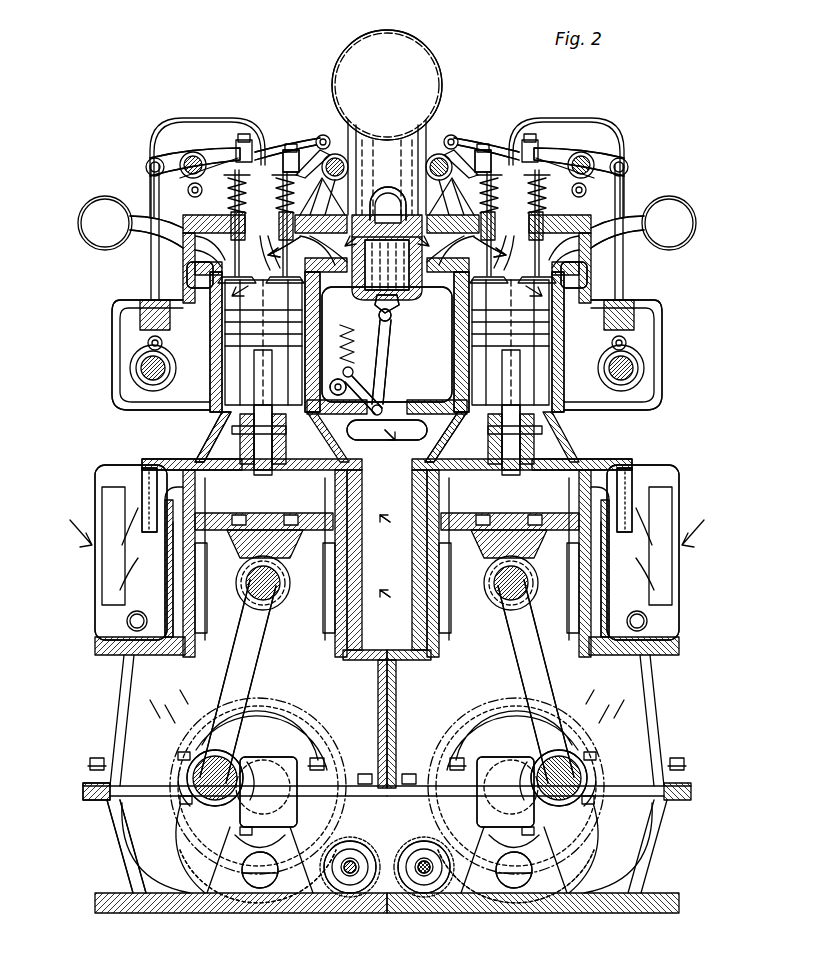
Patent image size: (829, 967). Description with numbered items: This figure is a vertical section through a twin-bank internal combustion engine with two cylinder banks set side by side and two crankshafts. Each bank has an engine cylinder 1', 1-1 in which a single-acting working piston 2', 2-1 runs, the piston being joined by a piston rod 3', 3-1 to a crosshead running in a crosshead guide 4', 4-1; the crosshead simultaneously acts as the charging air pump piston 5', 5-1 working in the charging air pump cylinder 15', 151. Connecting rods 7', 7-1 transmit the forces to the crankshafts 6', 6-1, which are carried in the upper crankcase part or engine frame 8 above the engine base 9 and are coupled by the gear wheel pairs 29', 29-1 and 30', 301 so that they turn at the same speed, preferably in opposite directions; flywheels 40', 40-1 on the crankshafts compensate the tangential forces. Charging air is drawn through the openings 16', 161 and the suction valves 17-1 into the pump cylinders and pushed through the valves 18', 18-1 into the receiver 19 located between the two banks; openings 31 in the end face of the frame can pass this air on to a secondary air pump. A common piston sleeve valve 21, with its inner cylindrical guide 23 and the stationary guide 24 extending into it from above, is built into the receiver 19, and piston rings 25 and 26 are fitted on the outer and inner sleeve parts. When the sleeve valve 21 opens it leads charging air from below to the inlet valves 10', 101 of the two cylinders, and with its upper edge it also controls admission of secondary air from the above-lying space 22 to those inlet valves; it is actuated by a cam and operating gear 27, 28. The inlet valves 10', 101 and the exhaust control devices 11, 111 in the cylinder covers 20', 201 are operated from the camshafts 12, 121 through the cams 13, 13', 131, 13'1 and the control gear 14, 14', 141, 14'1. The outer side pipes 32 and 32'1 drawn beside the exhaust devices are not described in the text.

The above-lying space 22 is at (383, 115).
The stationary guide 24 is at (398, 195).
The inner cylindrical guide 23 is at (387, 253).
The control gear 14 is at (179, 141).
The inlet valve 10' is at (283, 138).
The control gear 14' is at (291, 122).
The intake pipe 32 is at (95, 206).
The exhaust control device 11 is at (184, 245).
The cylinder cover 20' is at (135, 275).
The cam 13' is at (114, 356).
The cam 13 is at (111, 368).
The camshaft 12 is at (135, 372).
The charging air pump cylinder 15' is at (146, 443).
The suction valve 17-1 is at (145, 490).
The opening 16' is at (107, 552).
The working piston 2' is at (263, 375).
The working piston 2-1 is at (490, 322).
The engine cylinder 1' is at (265, 342).
The engine cylinder 1-1 is at (520, 385).
The piston rod 3' is at (224, 440).
The piston rod 3-1 is at (520, 413).
The valve 18' is at (182, 437).
The valve 18-1 is at (475, 462).
The operating gear 28 is at (378, 360).
The openings 31 is at (398, 312).
The piston sleeve valve 21 is at (408, 296).
The receiver 19 is at (402, 363).
The cam and operating gear 27 is at (348, 395).
The piston ring 25 is at (295, 245).
The piston ring 26 is at (479, 245).
The charging air pump piston 5' is at (264, 517).
The charging air compressor piston 5-1 is at (490, 512).
The crosshead guide 4' is at (285, 583).
The crosshead guide 4-1 is at (566, 602).
The connecting rod 7' is at (244, 681).
The connecting rod 7-1 is at (530, 697).
The crankshaft 6' is at (253, 756).
The crankshaft 6-1 is at (511, 787).
The upper crankcase part 8 is at (95, 785).
The engine base 9 is at (108, 826).
The flywheel 40' is at (258, 903).
The flywheel 40-1 is at (546, 870).
The gear wheel 29' is at (264, 904).
The gear wheel 29-1 is at (514, 870).
The gear wheel 30' is at (350, 898).
The gear wheel 301 is at (424, 885).
The control gear 14'1 is at (486, 122).
The inlet valve 101 is at (490, 150).
The control gear 141 is at (570, 155).
The intake pipe 32'1 is at (678, 205).
The exhaust control device 111 is at (590, 245).
The cylinder cover 201 is at (587, 280).
The cam 13'1 is at (662, 359).
The cam 131 is at (644, 368).
The camshaft 121 is at (639, 372).
The charging air pump cylinder 151 is at (626, 466).
The opening 161 is at (666, 507).